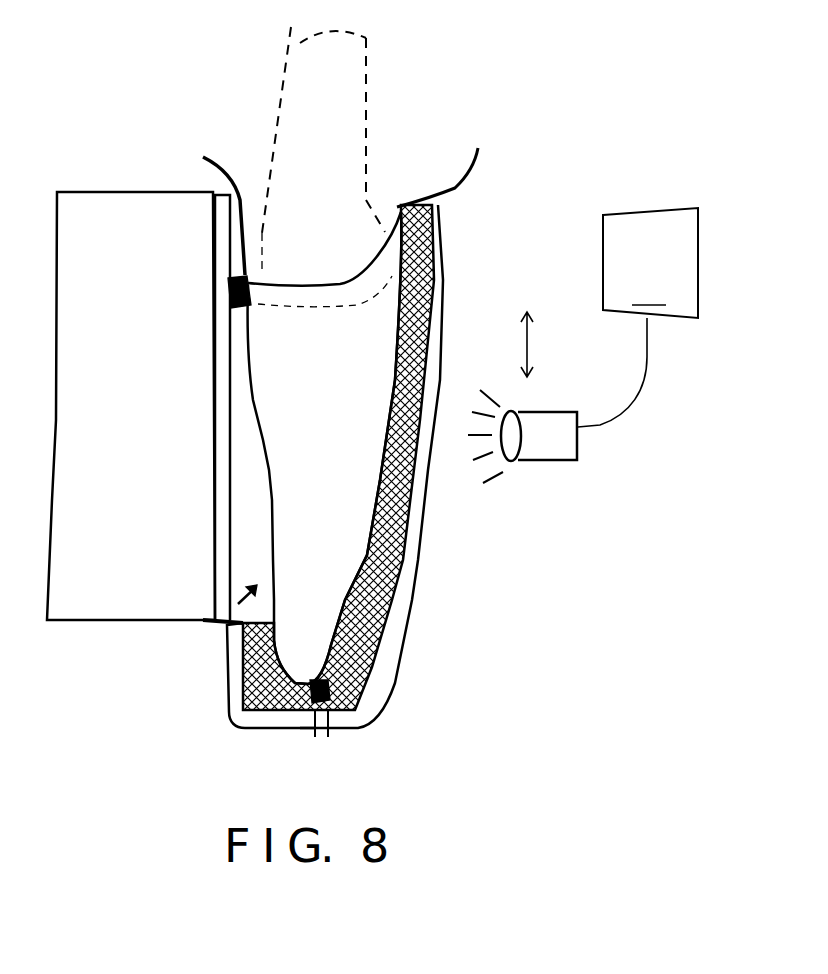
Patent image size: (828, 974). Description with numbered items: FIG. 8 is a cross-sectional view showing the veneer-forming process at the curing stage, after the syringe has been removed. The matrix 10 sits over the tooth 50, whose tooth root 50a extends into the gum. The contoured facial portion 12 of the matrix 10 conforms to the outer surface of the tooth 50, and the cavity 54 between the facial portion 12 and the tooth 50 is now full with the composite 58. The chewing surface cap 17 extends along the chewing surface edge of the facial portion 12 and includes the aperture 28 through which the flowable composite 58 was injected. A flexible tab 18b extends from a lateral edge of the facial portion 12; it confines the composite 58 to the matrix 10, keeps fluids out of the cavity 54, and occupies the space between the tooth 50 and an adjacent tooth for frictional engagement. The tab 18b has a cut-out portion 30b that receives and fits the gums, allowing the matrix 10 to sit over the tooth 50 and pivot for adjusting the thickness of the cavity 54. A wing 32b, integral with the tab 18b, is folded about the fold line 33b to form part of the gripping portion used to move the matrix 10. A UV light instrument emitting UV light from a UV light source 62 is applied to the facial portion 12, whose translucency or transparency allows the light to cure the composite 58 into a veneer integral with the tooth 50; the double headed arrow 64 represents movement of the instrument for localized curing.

The matrix 10 is at (455, 257).
The facial portion 12 is at (453, 283).
The chewing surface cap 17 is at (302, 737).
The tab 18b is at (216, 619).
The aperture 28 is at (320, 737).
The cut-out portion 30b is at (313, 305).
The wing 32b is at (150, 358).
The fold line 33b is at (217, 455).
The tooth 50 is at (338, 418).
The tooth root 50a is at (350, 111).
The cavity 54 is at (408, 560).
The composite 58 is at (400, 628).
The UV light source 62 is at (583, 345).
The double headed arrow 64 is at (535, 342).